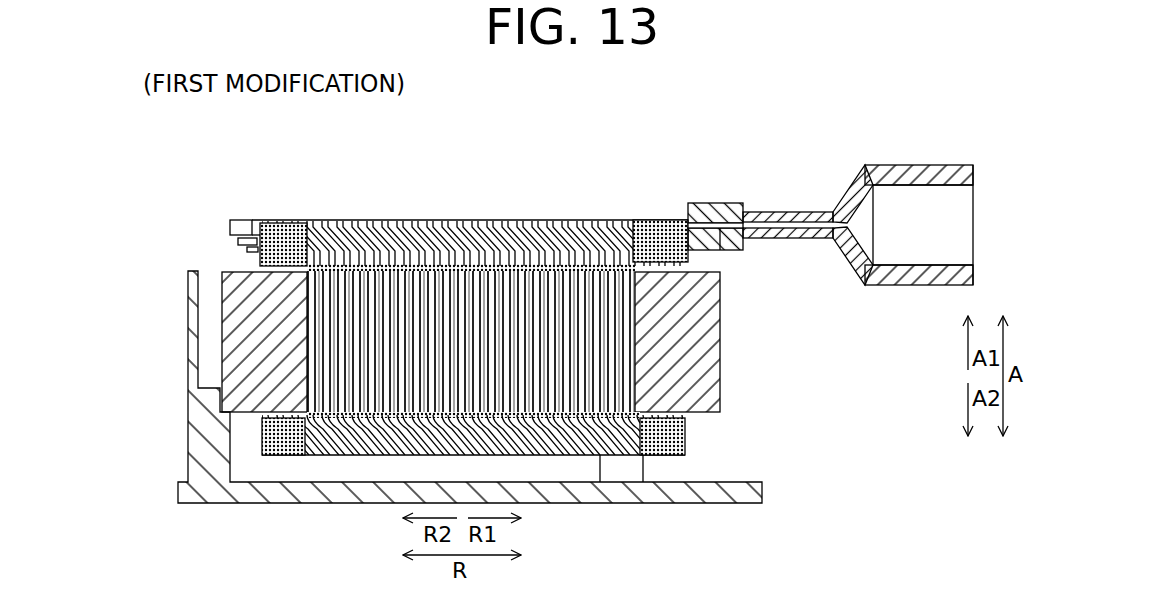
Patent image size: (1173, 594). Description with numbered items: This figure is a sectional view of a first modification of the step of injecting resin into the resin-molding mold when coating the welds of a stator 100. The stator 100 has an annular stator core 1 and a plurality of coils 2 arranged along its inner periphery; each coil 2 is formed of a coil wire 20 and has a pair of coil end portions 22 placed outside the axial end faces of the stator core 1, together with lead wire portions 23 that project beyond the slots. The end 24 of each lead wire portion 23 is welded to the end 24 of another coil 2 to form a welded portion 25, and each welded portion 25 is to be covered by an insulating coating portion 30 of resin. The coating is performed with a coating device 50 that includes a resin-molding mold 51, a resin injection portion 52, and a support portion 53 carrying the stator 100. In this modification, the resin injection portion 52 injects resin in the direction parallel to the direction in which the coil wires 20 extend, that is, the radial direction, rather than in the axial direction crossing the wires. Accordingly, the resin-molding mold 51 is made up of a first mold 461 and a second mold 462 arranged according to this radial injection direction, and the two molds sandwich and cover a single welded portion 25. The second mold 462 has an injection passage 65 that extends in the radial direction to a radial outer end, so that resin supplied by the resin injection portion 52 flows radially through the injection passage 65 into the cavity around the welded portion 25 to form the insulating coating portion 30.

The stator 100 is at (414, 179).
The stator core 1 is at (730, 350).
The coil 2 is at (507, 209).
The coil wire 20 is at (471, 341).
The coil end portion 22 is at (473, 209).
The lead wire portion 23 is at (282, 221).
The end 24 is at (258, 209).
The welded portion 25 is at (686, 215).
The insulating coating portion 30 is at (237, 220).
The coating device 50 is at (901, 141).
The resin-molding mold 51 is at (718, 198).
The resin injection portion 52 is at (832, 171).
The support portion 53 is at (210, 452).
The injection passage 65 is at (745, 243).
The first mold 461 is at (709, 250).
The second mold 462 is at (736, 203).